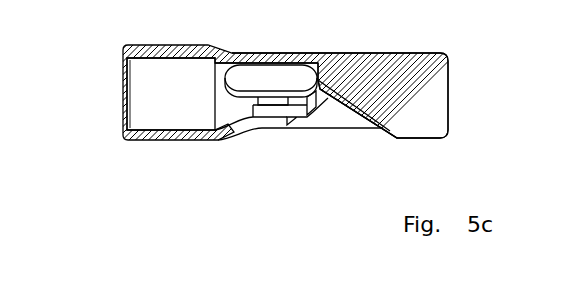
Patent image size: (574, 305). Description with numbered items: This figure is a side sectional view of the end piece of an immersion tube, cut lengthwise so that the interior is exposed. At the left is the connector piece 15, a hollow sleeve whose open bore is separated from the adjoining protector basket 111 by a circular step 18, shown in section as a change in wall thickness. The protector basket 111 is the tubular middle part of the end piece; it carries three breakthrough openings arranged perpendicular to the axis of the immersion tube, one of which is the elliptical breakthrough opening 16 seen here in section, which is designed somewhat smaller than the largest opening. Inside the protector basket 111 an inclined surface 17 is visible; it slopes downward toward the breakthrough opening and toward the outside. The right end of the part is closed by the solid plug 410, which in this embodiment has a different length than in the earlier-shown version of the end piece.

The connector piece 15 is at (142, 140).
The breakthrough opening 16 is at (277, 78).
The inclined surface 17 is at (347, 108).
The circular step 18 is at (210, 63).
The protector basket 111 is at (255, 55).
The plug 410 is at (428, 90).